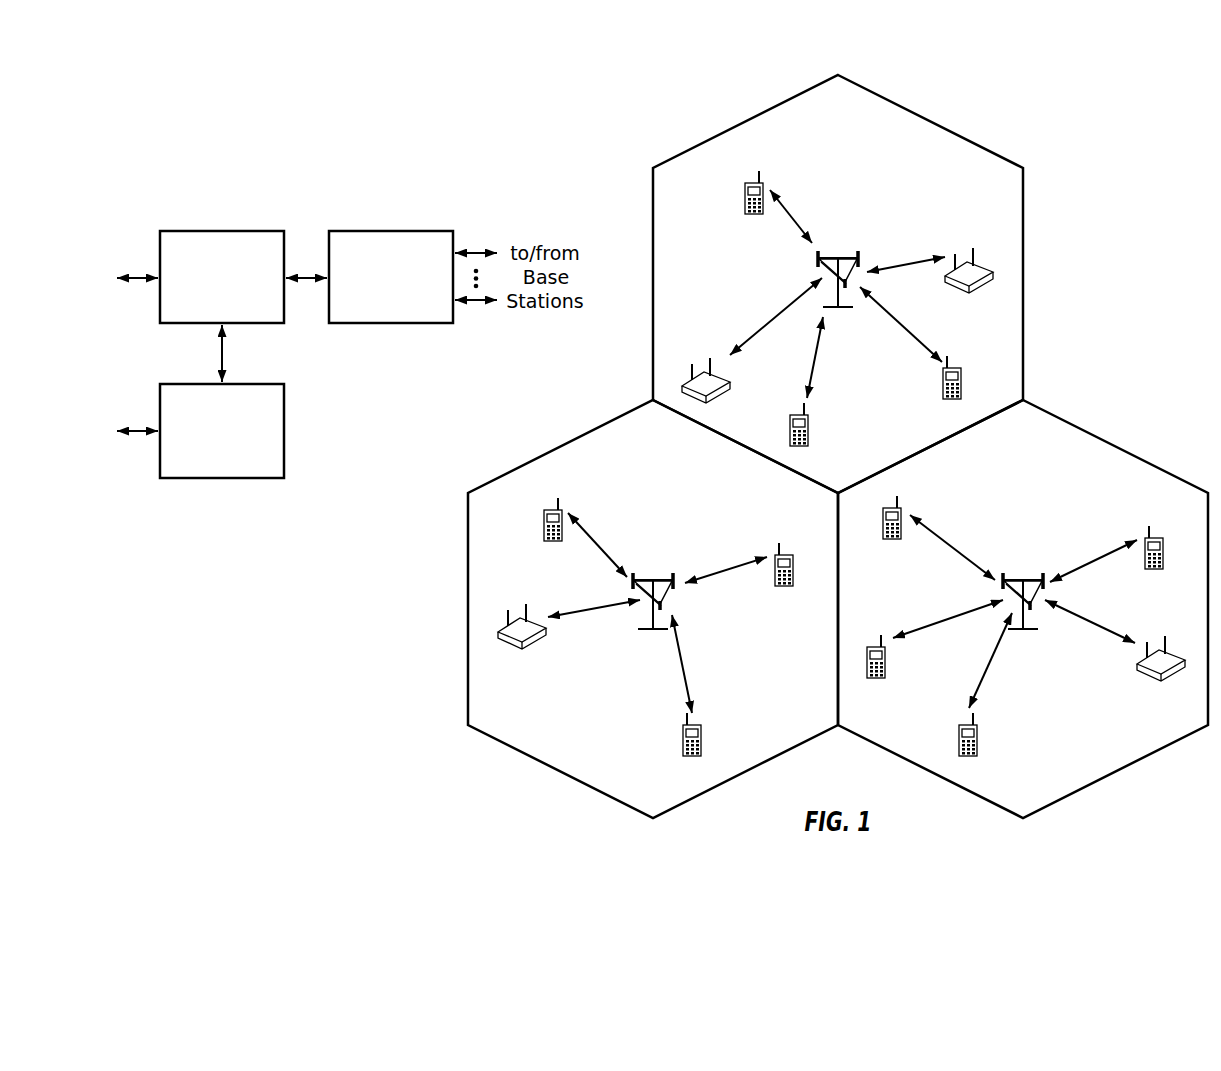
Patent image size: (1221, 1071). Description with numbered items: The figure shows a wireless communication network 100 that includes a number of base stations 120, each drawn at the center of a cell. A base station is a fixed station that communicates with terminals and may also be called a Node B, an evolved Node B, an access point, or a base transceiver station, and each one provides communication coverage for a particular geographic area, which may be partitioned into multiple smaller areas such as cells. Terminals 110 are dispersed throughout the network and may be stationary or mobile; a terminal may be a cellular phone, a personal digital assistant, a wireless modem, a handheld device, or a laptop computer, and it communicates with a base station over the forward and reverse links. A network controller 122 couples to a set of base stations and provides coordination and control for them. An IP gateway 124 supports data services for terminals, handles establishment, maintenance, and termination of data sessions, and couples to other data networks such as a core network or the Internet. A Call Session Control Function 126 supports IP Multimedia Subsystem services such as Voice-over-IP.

The wireless communication network 100 is at (1150, 101).
The terminals 110 is at (745, 195).
The base stations 120 is at (832, 257).
The network controller 122 is at (385, 231).
The IP gateway 124 is at (216, 231).
The Call Session Control Function 126 is at (247, 384).